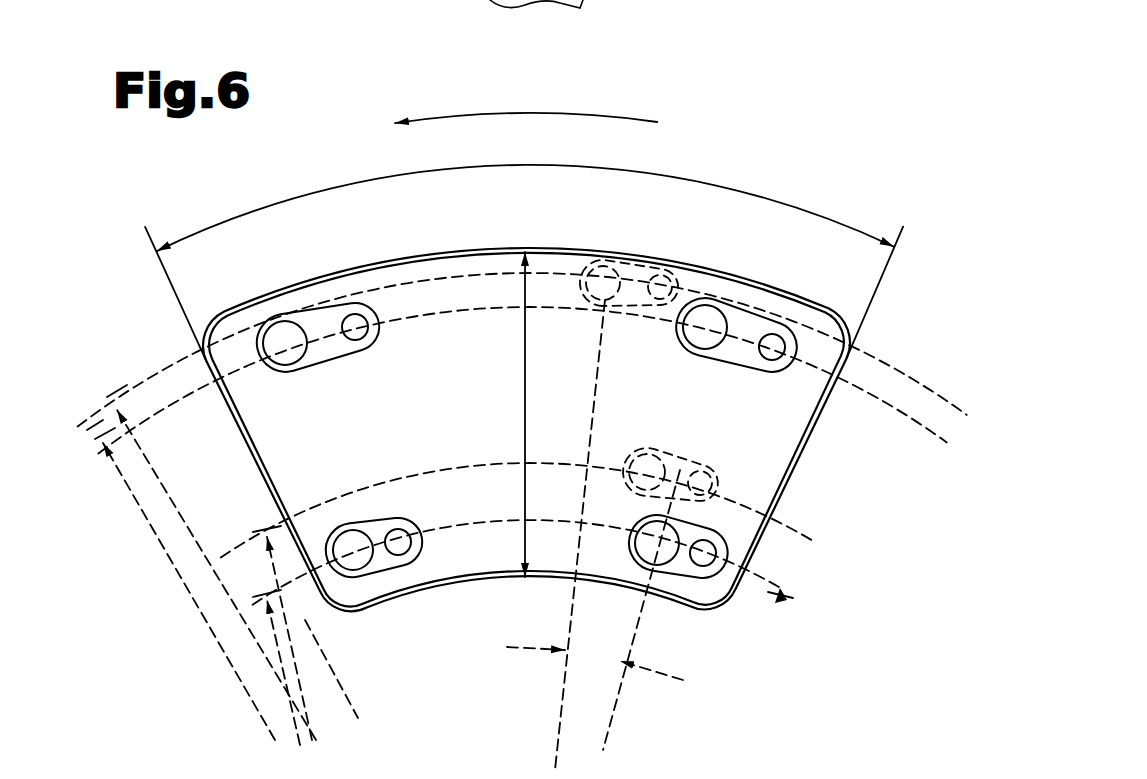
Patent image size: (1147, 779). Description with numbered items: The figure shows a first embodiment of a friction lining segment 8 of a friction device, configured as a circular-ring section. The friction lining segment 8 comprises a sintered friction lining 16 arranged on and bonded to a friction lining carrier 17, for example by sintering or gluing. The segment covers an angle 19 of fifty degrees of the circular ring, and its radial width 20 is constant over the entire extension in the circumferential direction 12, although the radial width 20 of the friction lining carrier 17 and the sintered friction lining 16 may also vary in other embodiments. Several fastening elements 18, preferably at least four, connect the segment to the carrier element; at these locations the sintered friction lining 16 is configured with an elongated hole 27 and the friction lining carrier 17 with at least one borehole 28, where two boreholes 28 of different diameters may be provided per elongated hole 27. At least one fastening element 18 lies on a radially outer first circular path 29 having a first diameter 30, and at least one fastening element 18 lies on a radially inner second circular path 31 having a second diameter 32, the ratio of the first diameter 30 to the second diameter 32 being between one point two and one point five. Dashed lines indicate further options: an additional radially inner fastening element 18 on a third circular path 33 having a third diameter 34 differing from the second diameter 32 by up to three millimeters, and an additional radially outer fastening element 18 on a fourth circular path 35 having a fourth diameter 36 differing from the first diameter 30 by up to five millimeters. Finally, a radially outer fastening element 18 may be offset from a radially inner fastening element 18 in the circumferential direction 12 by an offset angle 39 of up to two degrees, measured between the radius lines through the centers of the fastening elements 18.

The friction lining segment 8 is at (197, 197).
The circumferential direction 12 is at (525, 110).
The sintered friction lining 16 is at (430, 300).
The friction lining carrier 17 is at (814, 292).
The fastening elements 18 is at (592, 266).
The angle 19 is at (662, 177).
The radial width 20 is at (525, 383).
The elongated hole 27 is at (397, 570).
The borehole 28 is at (363, 578).
The first circular path 29 is at (883, 400).
The first diameter 30 is at (185, 563).
The second circular path 31 is at (780, 595).
The second diameter 32 is at (293, 653).
The third circular path 33 is at (815, 545).
The third diameter 34 is at (320, 647).
The fourth circular path 35 is at (936, 395).
The fourth diameter 36 is at (165, 490).
The offset angle 39 is at (600, 655).